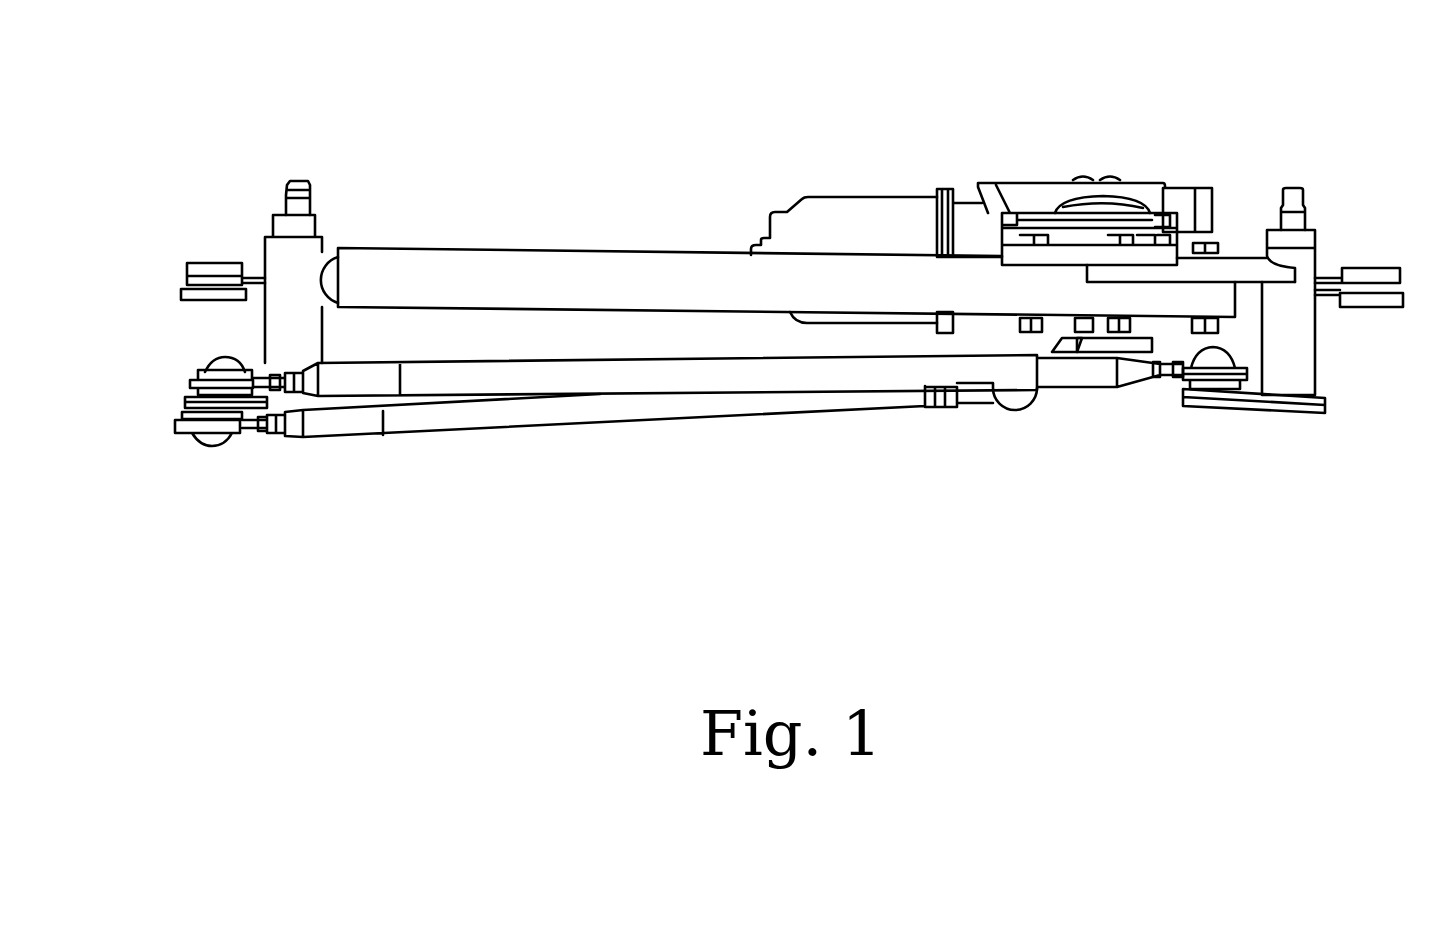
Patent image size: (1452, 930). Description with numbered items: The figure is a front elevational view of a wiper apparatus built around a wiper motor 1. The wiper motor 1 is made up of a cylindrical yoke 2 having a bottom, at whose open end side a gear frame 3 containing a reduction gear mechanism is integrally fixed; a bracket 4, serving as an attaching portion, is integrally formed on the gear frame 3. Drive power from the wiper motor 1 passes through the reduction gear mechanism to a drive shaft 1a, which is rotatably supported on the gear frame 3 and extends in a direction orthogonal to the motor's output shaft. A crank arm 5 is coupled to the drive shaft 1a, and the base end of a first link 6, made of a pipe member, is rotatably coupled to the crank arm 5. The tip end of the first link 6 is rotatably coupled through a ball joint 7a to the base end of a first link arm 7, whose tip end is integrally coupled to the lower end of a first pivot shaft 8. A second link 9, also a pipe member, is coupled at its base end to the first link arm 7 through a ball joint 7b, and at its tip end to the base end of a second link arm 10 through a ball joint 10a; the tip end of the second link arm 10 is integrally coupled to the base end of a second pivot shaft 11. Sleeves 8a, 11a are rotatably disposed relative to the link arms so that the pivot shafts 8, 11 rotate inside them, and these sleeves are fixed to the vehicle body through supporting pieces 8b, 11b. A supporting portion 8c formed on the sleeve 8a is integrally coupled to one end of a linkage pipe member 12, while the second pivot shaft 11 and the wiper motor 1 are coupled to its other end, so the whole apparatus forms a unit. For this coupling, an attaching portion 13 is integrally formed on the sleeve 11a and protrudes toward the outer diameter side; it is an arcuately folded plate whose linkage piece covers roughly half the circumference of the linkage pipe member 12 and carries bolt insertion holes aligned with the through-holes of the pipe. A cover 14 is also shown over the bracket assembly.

The wiper motor 1 is at (926, 128).
The drive shaft 1a is at (1107, 352).
The cylindrical yoke 2 is at (858, 218).
The gear frame 3 is at (968, 220).
The bracket 4 is at (1160, 170).
The crank arm 5 is at (1070, 350).
The first link 6 is at (605, 410).
The first link arm 7 is at (198, 385).
The ball joint 7a is at (215, 446).
The ball joint 7b is at (222, 357).
The first pivot shaft 8 is at (293, 180).
The sleeve 8a is at (308, 240).
The supporting piece 8b is at (213, 262).
The supporting portion 8c is at (330, 278).
The second link 9 is at (755, 375).
The second link arm 10 is at (1285, 400).
The ball joint 10a is at (1213, 355).
The second pivot shaft 11 is at (1298, 200).
The sleeve 11a is at (1300, 351).
The supporting piece 11b is at (1380, 270).
The linkage pipe member 12 is at (565, 265).
The attaching portion 13 is at (1237, 262).
The cover 14 is at (1060, 253).